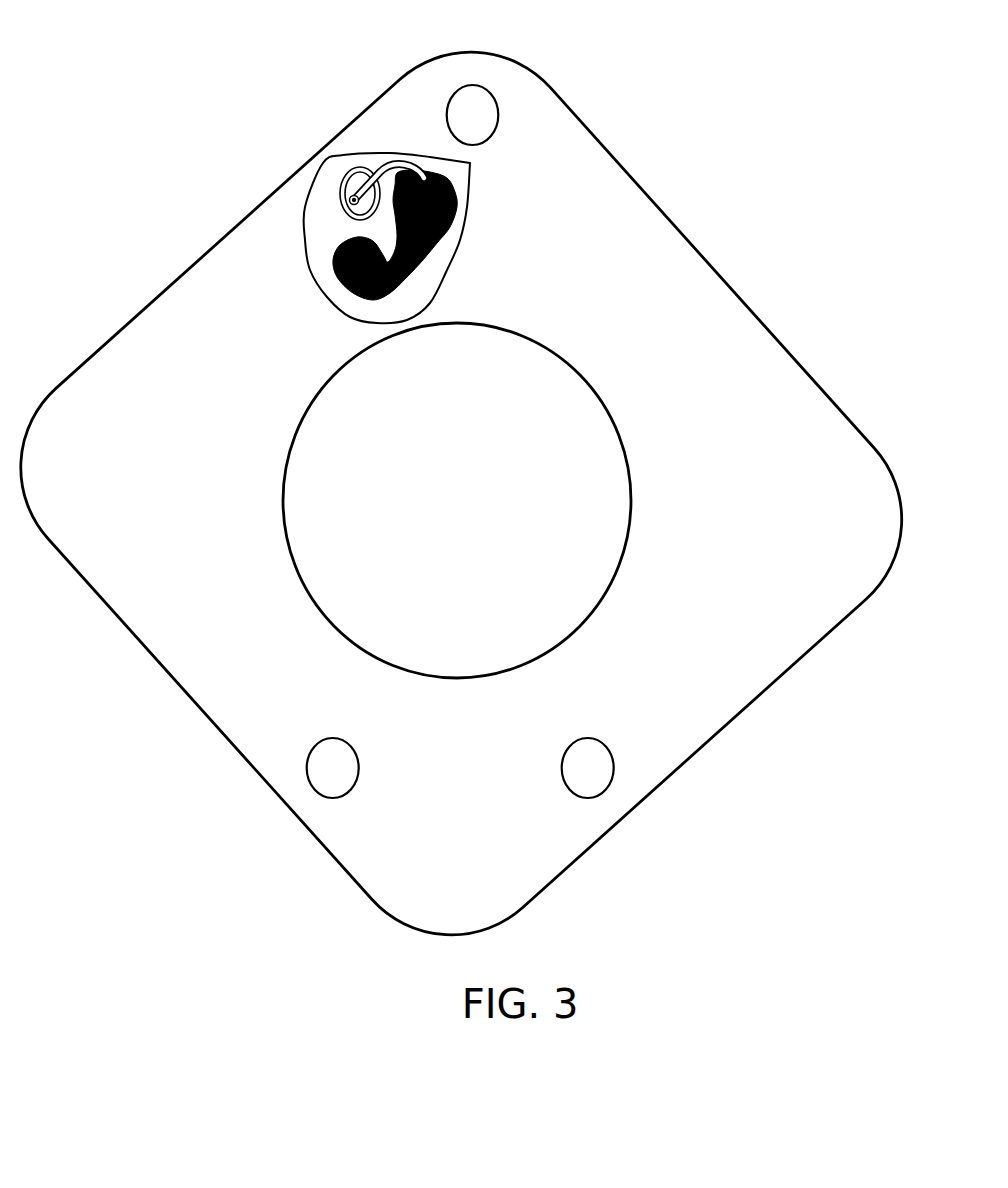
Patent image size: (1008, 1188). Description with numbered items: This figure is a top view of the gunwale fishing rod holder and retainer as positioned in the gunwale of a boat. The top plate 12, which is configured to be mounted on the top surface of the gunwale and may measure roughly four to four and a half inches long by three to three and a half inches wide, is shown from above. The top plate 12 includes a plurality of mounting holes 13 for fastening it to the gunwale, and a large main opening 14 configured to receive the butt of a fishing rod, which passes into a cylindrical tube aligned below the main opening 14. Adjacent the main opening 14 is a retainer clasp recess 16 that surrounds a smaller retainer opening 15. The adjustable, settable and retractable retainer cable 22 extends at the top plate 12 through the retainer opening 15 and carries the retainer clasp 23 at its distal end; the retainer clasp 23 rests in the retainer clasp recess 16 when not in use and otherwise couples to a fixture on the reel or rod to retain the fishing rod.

The top plate 12 is at (665, 218).
The mounting holes 13 is at (436, 829).
The main opening 14 is at (335, 632).
The retainer opening 15 is at (346, 170).
The retainer clasp recess 16 is at (320, 200).
The retainer cable 22 is at (391, 161).
The retainer clasp 23 is at (338, 380).